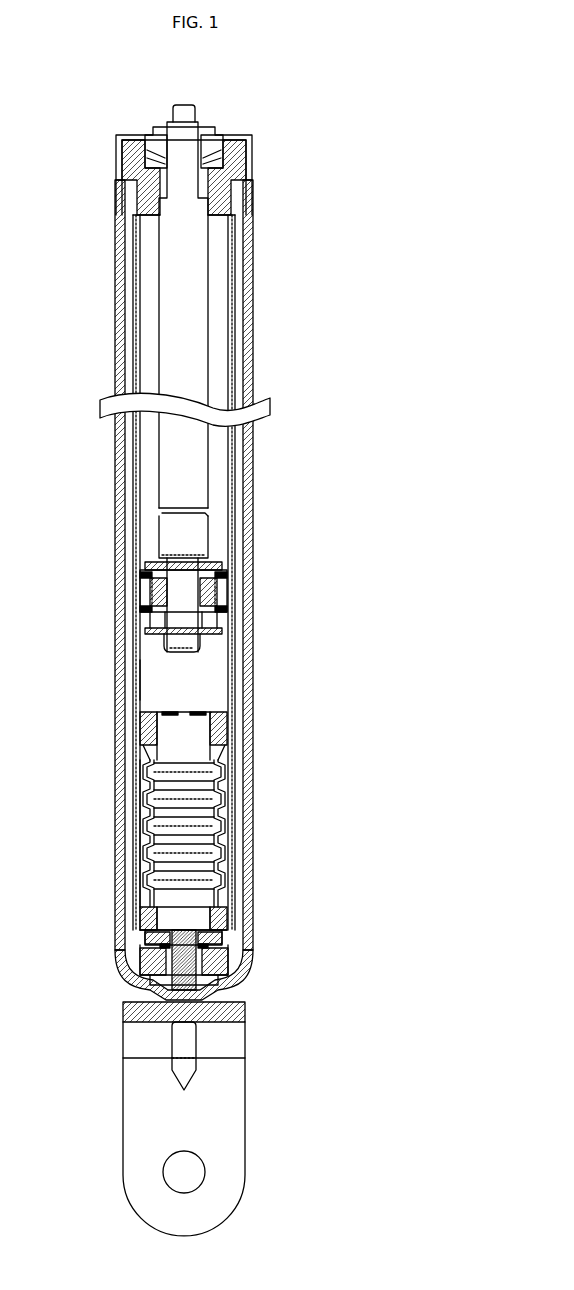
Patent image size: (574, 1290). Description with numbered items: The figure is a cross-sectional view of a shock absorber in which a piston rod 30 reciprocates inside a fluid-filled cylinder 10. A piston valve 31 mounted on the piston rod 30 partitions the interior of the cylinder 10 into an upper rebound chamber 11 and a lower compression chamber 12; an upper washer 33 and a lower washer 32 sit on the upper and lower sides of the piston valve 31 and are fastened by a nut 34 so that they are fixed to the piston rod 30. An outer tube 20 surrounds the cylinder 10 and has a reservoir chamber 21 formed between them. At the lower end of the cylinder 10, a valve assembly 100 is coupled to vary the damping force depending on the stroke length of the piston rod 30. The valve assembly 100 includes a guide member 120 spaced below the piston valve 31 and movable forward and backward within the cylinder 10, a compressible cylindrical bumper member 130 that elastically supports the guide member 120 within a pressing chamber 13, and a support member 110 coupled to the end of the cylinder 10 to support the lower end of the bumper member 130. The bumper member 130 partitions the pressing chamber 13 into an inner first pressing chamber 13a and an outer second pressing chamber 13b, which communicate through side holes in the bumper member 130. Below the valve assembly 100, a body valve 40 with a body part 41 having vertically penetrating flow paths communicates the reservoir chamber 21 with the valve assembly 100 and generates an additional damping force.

The cylinder 10 is at (232, 440).
The rebound chamber 11 is at (218, 488).
The compression chamber 12 is at (154, 682).
The pressing chamber 13 is at (250, 833).
The first pressing chamber 13a is at (222, 817).
The second pressing chamber 13b is at (226, 855).
The outer tube 20 is at (248, 253).
The reservoir chamber 21 is at (236, 290).
The piston rod 30 is at (196, 528).
The piston valve 31 is at (225, 597).
The lower washer 32 is at (218, 630).
The upper washer 33 is at (218, 563).
The nut 34 is at (205, 650).
The body valve 40 is at (238, 960).
The body part 41 is at (232, 933).
The valve assembly 100 is at (207, 823).
The support member 110 is at (140, 918).
The guide member 120 is at (140, 722).
The bumper member 130 is at (150, 812).